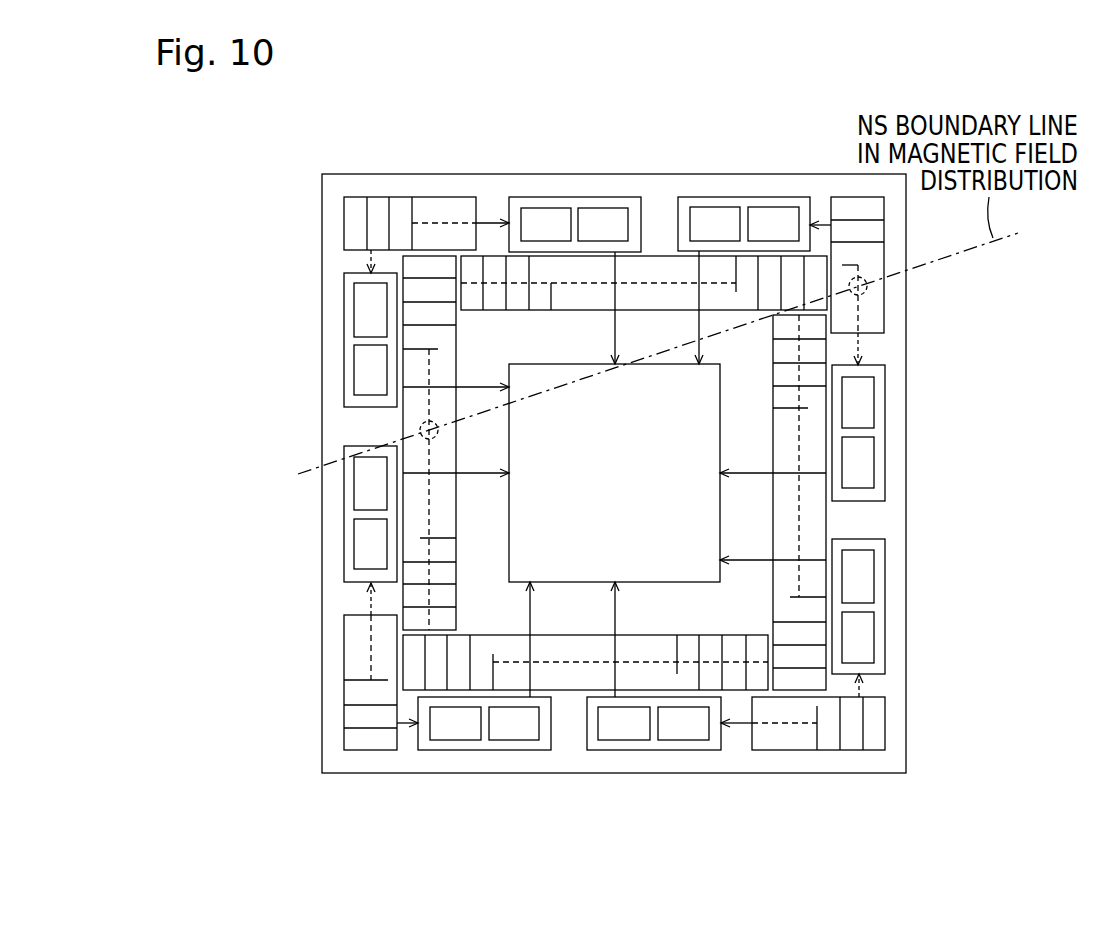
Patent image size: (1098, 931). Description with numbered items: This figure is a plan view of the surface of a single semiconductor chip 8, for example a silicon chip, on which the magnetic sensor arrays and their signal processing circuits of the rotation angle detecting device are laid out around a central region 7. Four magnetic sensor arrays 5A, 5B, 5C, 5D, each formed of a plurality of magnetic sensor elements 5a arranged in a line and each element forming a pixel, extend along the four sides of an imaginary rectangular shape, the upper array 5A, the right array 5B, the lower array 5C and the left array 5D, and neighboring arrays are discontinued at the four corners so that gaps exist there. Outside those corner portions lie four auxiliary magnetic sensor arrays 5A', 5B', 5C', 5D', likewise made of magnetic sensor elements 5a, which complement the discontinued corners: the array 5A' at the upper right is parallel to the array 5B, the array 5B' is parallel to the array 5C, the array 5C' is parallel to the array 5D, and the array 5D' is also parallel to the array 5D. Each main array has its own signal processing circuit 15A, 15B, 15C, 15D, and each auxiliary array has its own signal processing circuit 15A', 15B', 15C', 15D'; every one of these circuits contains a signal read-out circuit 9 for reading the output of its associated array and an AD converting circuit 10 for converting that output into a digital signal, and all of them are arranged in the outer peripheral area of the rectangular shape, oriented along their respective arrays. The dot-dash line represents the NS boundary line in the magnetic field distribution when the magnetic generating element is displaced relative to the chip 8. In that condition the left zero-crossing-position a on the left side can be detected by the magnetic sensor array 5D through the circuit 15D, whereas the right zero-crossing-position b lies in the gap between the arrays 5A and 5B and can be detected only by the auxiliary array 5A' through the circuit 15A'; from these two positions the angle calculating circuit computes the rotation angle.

The semiconductor chip 8 is at (362, 182).
The central body (movable element) 7 is at (672, 570).
The magnetic sensor array 5A is at (644, 221).
The magnetic sensor array 5B is at (858, 502).
The magnetic sensor array 5C is at (585, 720).
The magnetic sensor array 5D is at (371, 443).
The auxiliary magnetic sensor array 5A' is at (904, 281).
The auxiliary magnetic sensor array 5B' is at (803, 751).
The auxiliary magnetic sensor array 5C' is at (334, 666).
The auxiliary magnetic sensor array 5D' is at (426, 186).
The magnetic sensor element 5a is at (515, 270).
The signal read-out circuit 9 is at (549, 208).
The AD converting circuit 10 is at (613, 208).
The signal processing circuit 15A is at (744, 164).
The signal processing circuit 15B is at (919, 606).
The signal processing circuit 15C is at (484, 785).
The signal processing circuit 15D is at (301, 340).
The signal processing circuit 15A' is at (931, 433).
The signal processing circuit 15B' is at (654, 785).
The signal processing circuit 15C' is at (295, 514).
The signal processing circuit 15D' is at (575, 158).
The left zero-crossing-position a is at (437, 436).
The right zero-crossing-position b is at (866, 292).